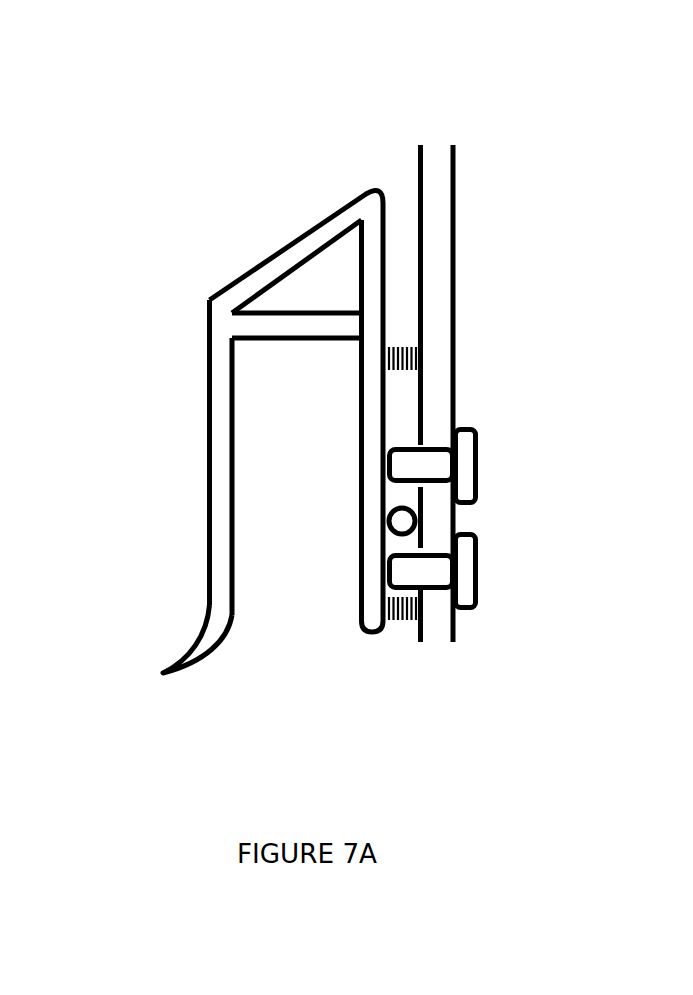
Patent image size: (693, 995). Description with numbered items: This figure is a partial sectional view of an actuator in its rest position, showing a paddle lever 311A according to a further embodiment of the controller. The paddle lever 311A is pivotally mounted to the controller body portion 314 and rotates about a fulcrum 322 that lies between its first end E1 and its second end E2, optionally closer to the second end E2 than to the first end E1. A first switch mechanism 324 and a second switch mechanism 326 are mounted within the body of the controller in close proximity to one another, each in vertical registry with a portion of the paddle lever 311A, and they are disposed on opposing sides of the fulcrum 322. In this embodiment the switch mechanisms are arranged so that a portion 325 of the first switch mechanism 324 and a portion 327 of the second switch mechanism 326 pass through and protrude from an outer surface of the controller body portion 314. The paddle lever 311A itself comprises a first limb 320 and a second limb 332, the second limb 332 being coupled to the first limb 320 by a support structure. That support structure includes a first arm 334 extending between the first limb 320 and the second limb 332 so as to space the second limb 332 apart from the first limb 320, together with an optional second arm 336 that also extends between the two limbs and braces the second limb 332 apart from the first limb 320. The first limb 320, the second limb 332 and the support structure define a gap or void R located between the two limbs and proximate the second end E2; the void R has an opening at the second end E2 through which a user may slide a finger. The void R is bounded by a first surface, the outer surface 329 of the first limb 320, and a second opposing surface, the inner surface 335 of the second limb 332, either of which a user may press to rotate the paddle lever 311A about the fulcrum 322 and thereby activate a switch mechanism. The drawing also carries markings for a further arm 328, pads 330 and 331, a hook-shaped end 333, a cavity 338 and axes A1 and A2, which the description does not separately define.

The paddle lever 311A is at (293, 165).
The controller body portion 314 is at (437, 210).
The first limb 320 is at (372, 466).
The fulcrum 322 is at (400, 525).
The first switch mechanism 324 is at (467, 465).
The portion of the first switch mechanism 325 is at (438, 443).
The second switch mechanism 326 is at (462, 577).
The portion of the second switch mechanism 327 is at (452, 612).
The angled arm 328 is at (385, 248).
The outer surface of the first limb 329 is at (360, 492).
The upper friction pad 330 is at (403, 350).
The lower friction pad 331 is at (407, 610).
The second limb 332 is at (220, 495).
The hook 333 is at (207, 573).
The first arm 334 is at (245, 285).
The inner surface of the second limb 335 is at (235, 562).
The second arm 336 is at (277, 322).
The cavity 338 is at (300, 385).
The first end E1 is at (371, 189).
The second end E2 is at (367, 633).
The first axis A1 is at (421, 444).
The second axis A2 is at (432, 577).
The void R is at (280, 607).